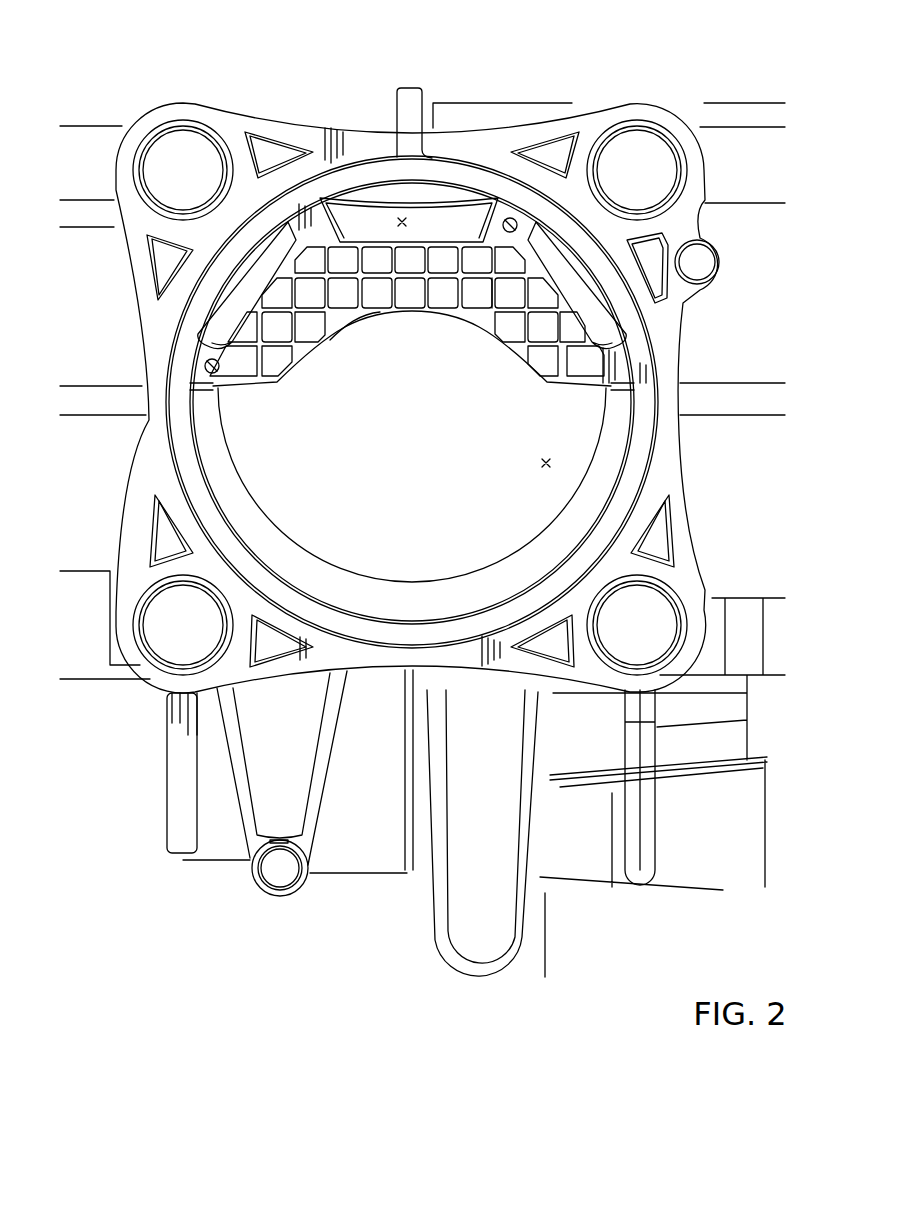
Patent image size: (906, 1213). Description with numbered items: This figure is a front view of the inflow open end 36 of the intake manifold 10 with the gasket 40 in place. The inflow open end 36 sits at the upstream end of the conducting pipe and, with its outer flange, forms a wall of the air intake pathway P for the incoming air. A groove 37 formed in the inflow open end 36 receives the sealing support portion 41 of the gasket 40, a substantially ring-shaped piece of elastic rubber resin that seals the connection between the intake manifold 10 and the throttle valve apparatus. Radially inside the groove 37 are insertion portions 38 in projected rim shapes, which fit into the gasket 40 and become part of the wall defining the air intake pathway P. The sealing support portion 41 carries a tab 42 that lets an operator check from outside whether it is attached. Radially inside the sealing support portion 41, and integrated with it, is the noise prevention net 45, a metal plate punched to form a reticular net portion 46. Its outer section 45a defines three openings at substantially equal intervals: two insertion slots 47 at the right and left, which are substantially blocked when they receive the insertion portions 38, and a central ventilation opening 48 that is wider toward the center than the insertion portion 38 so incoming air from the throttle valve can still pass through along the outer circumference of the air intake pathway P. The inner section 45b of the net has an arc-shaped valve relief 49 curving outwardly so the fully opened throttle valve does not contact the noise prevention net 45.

The intake manifold 10 is at (685, 80).
The inflow open end 36 is at (585, 447).
The groove 37 is at (515, 220).
The insertion portions 38 is at (273, 243).
The gasket 40 is at (614, 516).
The sealing support portion 41 is at (625, 312).
The tab 42 is at (408, 100).
The noise prevention net 45 is at (455, 292).
The outer section 45a is at (498, 195).
The inner section 45b is at (478, 336).
The net portion 46 is at (497, 293).
The insertion slots 47 is at (250, 388).
The ventilation opening 48 is at (400, 218).
The valve relief 49 is at (352, 322).
The air intake pathway P is at (550, 466).